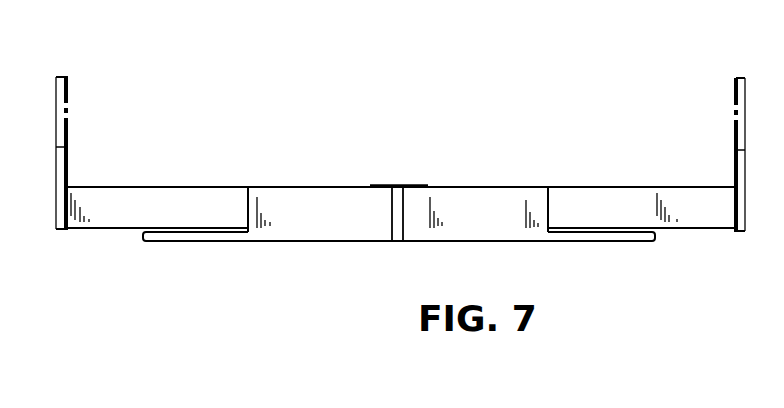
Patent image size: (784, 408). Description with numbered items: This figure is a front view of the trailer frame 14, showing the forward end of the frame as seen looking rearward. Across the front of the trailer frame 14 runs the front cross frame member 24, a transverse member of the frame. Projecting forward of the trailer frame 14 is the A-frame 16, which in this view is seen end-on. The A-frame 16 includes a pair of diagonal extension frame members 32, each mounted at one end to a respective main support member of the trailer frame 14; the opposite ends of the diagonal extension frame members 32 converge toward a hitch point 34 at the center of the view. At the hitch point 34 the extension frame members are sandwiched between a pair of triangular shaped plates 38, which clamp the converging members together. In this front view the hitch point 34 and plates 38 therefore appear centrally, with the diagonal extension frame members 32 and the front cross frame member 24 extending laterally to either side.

The trailer frame 14 is at (109, 126).
The A-frame 16 is at (245, 253).
The front cross frame member 24 is at (702, 215).
The diagonal extension frame members 32 is at (268, 198).
The hitch point 34 is at (390, 160).
The triangular shaped plates 38 is at (408, 185).